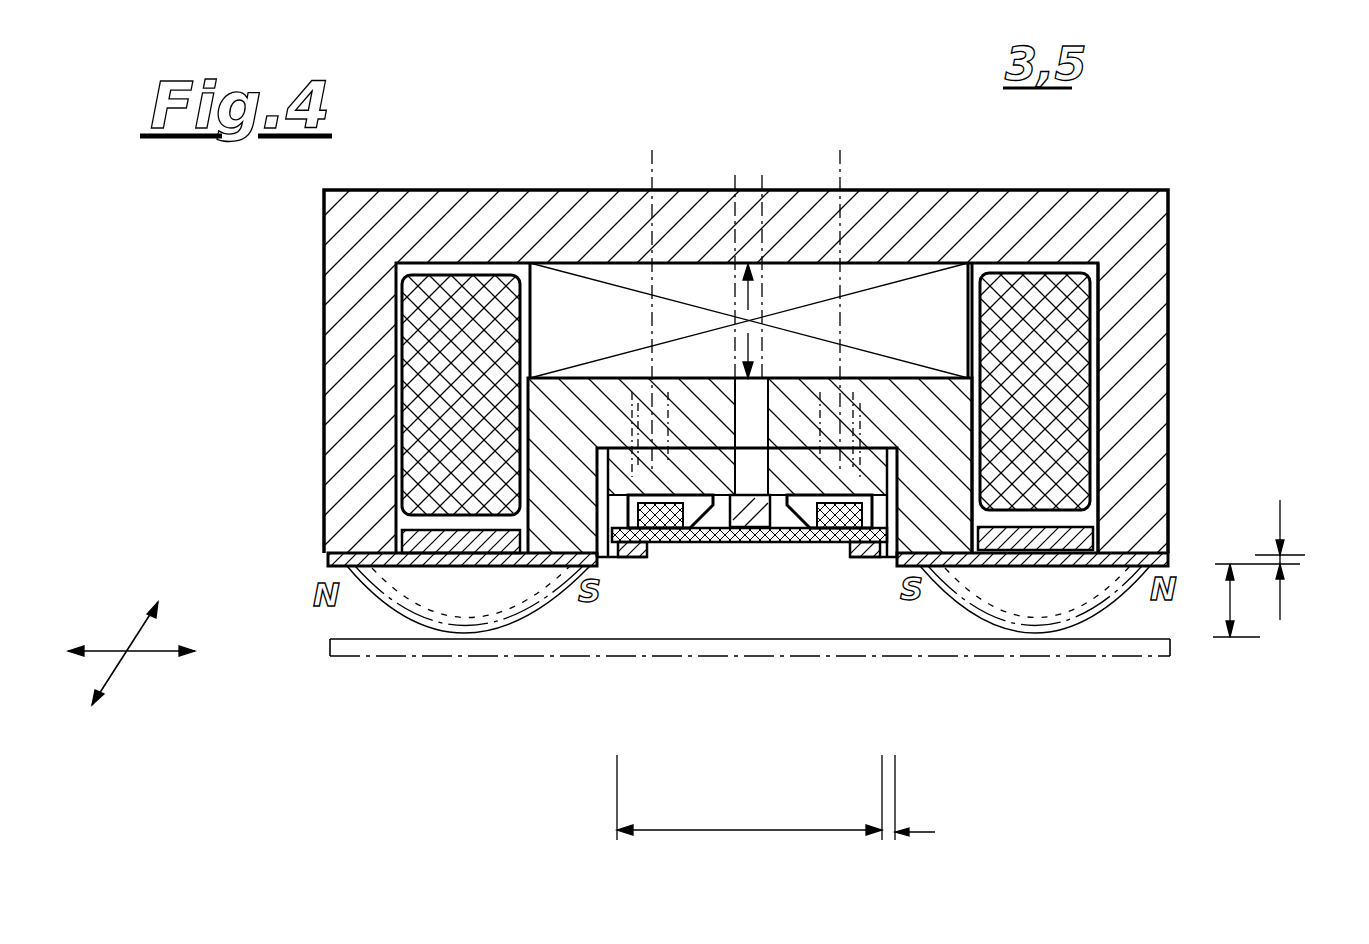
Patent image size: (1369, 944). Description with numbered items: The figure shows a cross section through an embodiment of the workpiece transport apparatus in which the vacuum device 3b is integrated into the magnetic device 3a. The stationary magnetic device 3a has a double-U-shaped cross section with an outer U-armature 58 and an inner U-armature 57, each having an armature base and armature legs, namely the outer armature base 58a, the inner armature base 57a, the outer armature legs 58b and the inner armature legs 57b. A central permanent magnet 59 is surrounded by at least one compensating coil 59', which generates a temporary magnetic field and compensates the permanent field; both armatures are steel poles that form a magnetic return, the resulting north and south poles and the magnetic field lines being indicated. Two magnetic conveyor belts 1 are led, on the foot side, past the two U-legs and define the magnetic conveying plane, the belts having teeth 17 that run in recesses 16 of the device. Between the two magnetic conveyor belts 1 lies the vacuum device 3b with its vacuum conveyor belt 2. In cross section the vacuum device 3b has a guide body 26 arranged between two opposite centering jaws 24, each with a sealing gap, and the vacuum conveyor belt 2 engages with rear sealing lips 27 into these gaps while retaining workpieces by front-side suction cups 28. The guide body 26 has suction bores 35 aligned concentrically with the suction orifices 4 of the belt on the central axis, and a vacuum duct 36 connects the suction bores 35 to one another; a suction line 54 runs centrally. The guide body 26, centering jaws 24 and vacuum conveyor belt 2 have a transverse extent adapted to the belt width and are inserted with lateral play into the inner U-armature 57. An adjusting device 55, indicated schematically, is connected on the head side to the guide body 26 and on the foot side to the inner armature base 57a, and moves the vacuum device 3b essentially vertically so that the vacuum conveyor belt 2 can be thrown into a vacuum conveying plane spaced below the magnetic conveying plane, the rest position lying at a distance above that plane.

The magnetic conveyor belt 1 is at (330, 560).
The vacuum conveyor belt 2 is at (715, 560).
The magnetic device 3a is at (492, 160).
The vacuum device 3b is at (893, 578).
The suction orifices 4 is at (753, 530).
The recesses 16 is at (1080, 523).
The teeth 17 is at (1073, 540).
The centering jaws 24 is at (630, 560).
The guide body 26 is at (822, 395).
The rear sealing lips 27 is at (673, 540).
The suction cups 28 is at (620, 545).
The suction bores 35 is at (741, 460).
The vacuum duct 36 is at (777, 542).
The suction line 54 is at (785, 455).
The adjusting device 55 is at (797, 377).
The inner U-armature 57 is at (672, 365).
The inner armature base 57a is at (892, 407).
The inner armature legs 57b is at (557, 492).
The outer U-armature 58 is at (623, 175).
The outer armature base 58a is at (480, 238).
The outer armature legs 58b is at (347, 338).
The permanent magnet 59 is at (500, 321).
The compensating coil 59' is at (1073, 334).